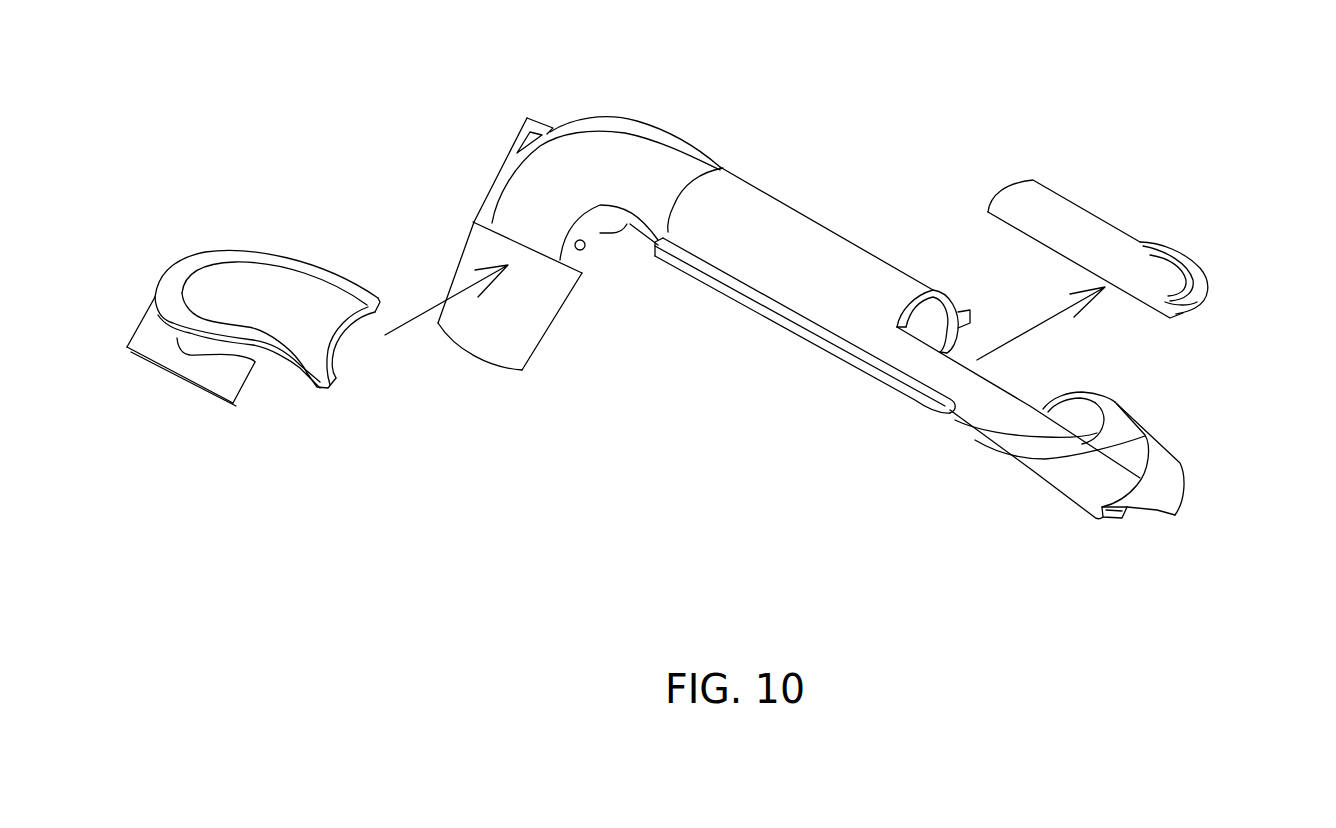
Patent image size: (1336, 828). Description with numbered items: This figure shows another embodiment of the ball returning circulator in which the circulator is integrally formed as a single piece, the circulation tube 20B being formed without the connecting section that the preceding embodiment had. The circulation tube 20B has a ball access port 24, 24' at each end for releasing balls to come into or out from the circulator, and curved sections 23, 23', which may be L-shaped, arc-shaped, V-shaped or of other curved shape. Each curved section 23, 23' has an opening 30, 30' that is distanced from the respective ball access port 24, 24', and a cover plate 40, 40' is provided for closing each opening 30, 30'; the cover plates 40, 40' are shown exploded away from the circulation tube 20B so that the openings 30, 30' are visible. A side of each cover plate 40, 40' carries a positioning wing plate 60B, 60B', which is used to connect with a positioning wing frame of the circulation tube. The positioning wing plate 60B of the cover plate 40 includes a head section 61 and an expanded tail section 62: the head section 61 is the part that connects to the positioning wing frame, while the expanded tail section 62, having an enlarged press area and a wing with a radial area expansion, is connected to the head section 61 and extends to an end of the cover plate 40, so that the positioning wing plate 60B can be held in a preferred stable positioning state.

The circulation tube 20B is at (836, 226).
The curved section 23 is at (597, 128).
The ball access port 24 is at (510, 337).
The opening 30 is at (777, 316).
The cover plate 40 is at (253, 269).
The head section 61 is at (288, 366).
The expanded tail section 62 is at (177, 338).
The positioning wing plate 60B is at (191, 489).
The curved section 23' is at (1034, 470).
The ball access port 24' is at (1173, 453).
The opening 30' is at (1106, 405).
The cover plate 40' is at (1106, 218).
The positioning wing plate 60B' is at (1199, 249).